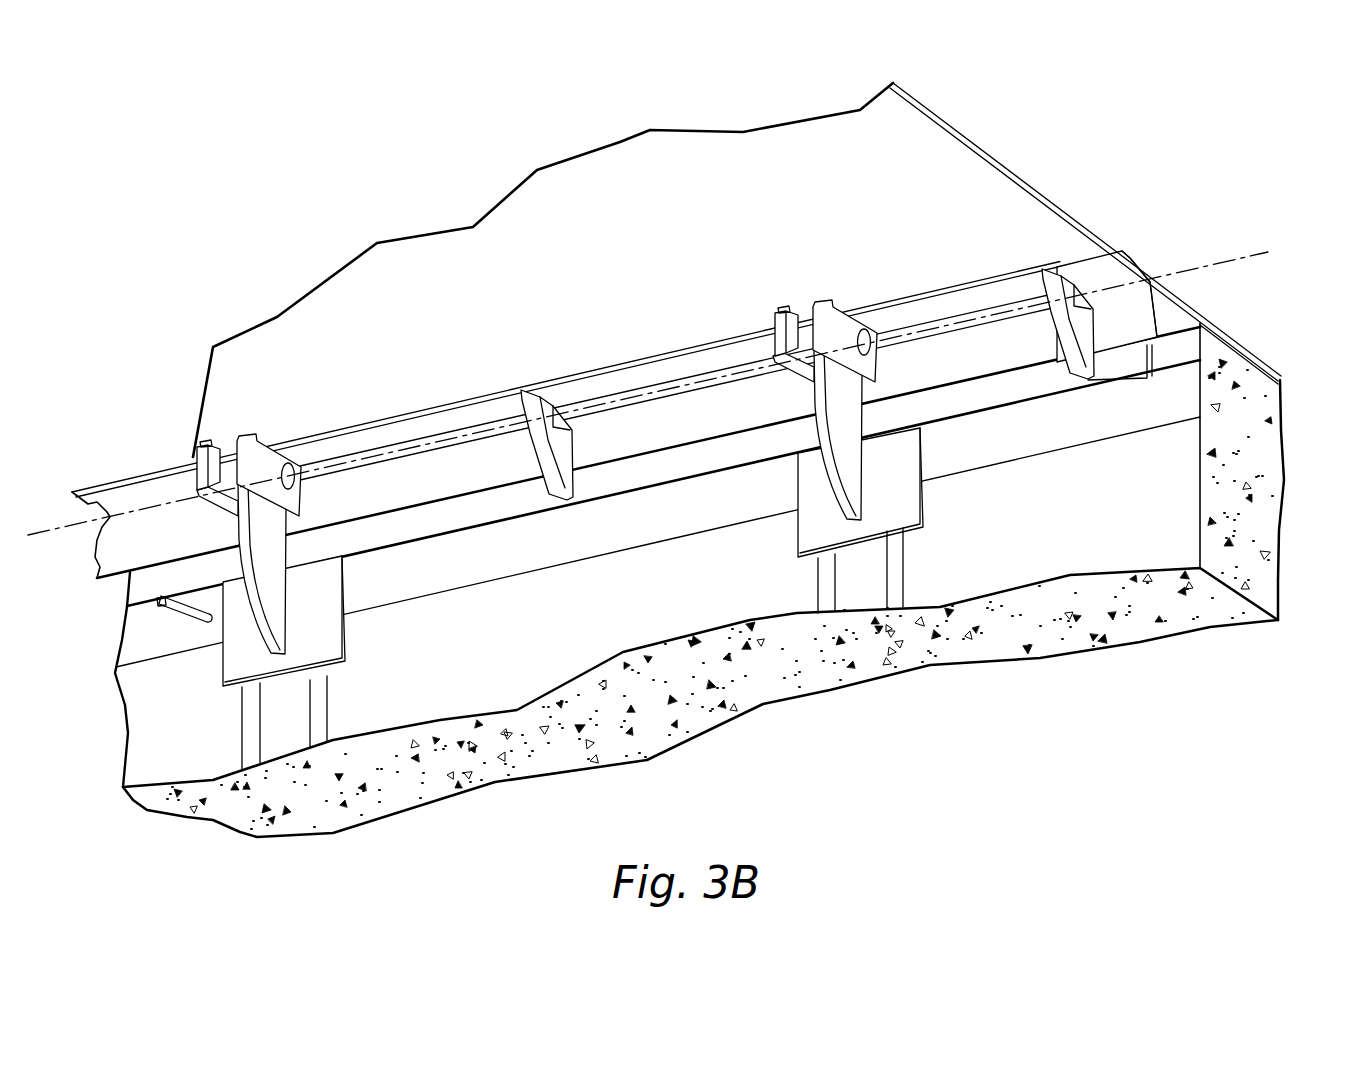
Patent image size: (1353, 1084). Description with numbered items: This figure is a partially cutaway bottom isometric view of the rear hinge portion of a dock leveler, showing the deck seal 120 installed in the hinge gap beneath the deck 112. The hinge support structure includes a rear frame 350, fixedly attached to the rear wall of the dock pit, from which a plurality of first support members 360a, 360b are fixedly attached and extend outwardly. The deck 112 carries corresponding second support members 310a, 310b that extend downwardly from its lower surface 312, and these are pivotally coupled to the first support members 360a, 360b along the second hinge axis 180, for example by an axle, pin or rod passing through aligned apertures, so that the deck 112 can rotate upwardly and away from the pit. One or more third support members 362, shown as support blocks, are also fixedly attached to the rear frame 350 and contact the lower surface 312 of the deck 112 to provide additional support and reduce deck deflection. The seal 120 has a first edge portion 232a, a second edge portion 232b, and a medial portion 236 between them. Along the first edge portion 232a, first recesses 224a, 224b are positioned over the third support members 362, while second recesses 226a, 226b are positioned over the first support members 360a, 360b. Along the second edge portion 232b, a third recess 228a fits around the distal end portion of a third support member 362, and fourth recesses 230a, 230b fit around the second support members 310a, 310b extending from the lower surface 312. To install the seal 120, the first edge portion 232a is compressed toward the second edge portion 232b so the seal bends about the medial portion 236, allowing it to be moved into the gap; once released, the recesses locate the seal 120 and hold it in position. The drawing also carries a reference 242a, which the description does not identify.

The deck 112 is at (1005, 167).
The lower surface 312 is at (1015, 207).
The seal 120 is at (670, 368).
The second hinge axis 180 is at (48, 534).
The slot axis line 242a is at (1153, 274).
The first recess 224a is at (1076, 380).
The first recess 224b is at (553, 476).
The rear frame 350 is at (1006, 388).
The second recess 226a is at (853, 402).
The second recess 226b is at (282, 531).
The third recess 228a is at (1057, 270).
The fourth recess 230a is at (832, 301).
The fourth recess 230b is at (250, 435).
The first edge portion 232a is at (1281, 404).
The second edge portion 232b is at (1137, 263).
The medial portion 236 is at (1173, 318).
The second support member 310a is at (775, 327).
The second support member 310b is at (200, 457).
The first support member 360a is at (828, 467).
The first support member 360b is at (260, 617).
The third support member 362 is at (537, 447).